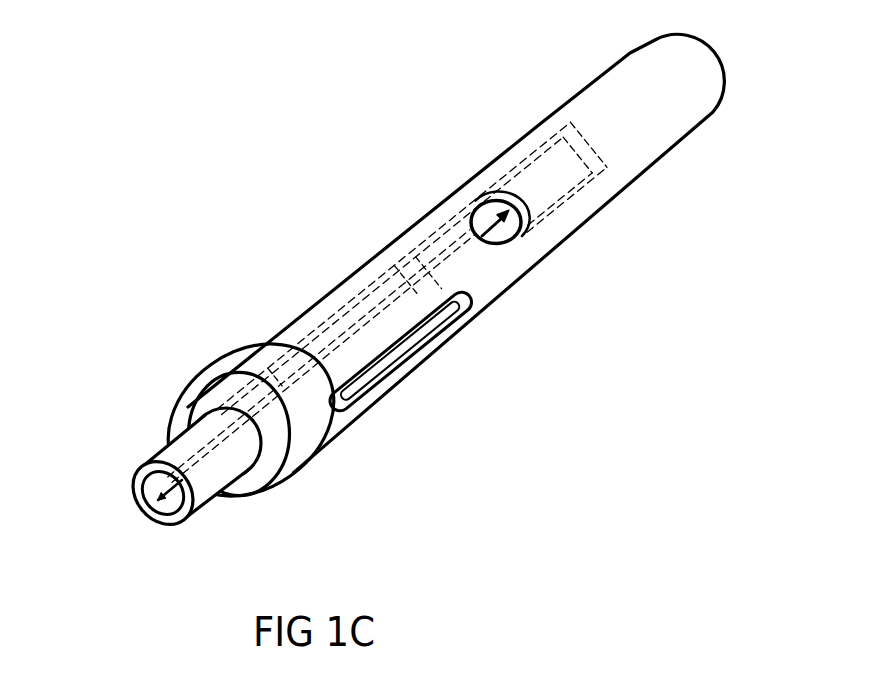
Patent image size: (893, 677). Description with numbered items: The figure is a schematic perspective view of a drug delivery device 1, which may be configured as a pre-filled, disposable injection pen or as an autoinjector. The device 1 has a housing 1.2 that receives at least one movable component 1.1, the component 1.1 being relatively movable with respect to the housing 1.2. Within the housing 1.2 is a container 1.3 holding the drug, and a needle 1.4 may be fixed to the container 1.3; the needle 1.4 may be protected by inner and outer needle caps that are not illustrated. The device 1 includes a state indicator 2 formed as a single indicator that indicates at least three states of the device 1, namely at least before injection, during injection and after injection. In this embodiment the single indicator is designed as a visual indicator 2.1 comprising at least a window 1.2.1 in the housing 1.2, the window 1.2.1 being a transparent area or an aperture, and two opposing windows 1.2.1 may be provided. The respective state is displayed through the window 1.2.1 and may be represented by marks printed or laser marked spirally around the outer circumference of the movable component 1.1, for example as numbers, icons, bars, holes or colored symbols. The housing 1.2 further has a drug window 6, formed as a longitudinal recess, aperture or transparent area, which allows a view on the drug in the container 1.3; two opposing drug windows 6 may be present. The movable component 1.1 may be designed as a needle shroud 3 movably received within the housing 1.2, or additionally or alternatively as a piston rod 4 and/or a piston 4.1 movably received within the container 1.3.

The drug delivery device 1 is at (264, 245).
The movable component 1.1 is at (178, 457).
The housing 1.2 is at (549, 217).
The window 1.2.1 is at (518, 206).
The container 1.3 is at (273, 376).
The needle 1.4 is at (195, 510).
The state indicator 2 is at (482, 202).
The visual indicator 2.1 is at (502, 200).
The needle shroud 3 is at (142, 503).
The piston rod 4 is at (447, 246).
The piston 4.1 is at (458, 304).
The drug window 6 is at (290, 322).